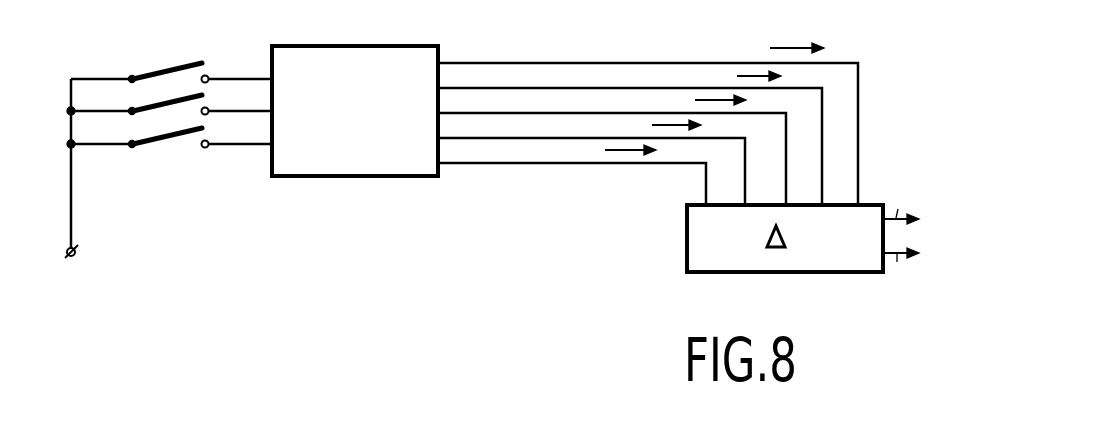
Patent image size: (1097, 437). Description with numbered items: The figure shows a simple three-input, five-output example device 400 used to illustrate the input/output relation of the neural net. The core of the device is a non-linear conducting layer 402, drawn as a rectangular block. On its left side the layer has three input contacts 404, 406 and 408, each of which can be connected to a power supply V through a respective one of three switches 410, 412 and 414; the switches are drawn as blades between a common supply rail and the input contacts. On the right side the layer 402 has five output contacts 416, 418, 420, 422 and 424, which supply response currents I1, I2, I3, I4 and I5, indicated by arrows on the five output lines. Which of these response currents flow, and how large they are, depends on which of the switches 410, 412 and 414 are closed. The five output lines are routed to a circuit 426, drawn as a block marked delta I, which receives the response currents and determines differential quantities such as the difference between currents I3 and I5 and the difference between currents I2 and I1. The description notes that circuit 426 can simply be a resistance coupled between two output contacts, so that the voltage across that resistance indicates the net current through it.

The 3-input/5-output example device 400 is at (512, 288).
The non-linear conducting layer 402 is at (330, 165).
The input contact 404 is at (258, 78).
The input contact 406 is at (248, 114).
The input contact 408 is at (220, 149).
The switch 410 is at (147, 71).
The switch 412 is at (203, 92).
The switch 414 is at (162, 148).
The output contact 416 is at (478, 62).
The output contact 418 is at (533, 87).
The output contact 420 is at (578, 112).
The output contact 422 is at (486, 140).
The output contact 424 is at (550, 165).
The circuit 426 is at (687, 233).
The response current I1 is at (791, 47).
The response current I2 is at (748, 75).
The response current I3 is at (712, 99).
The response current I4 is at (668, 126).
The response current I5 is at (626, 162).